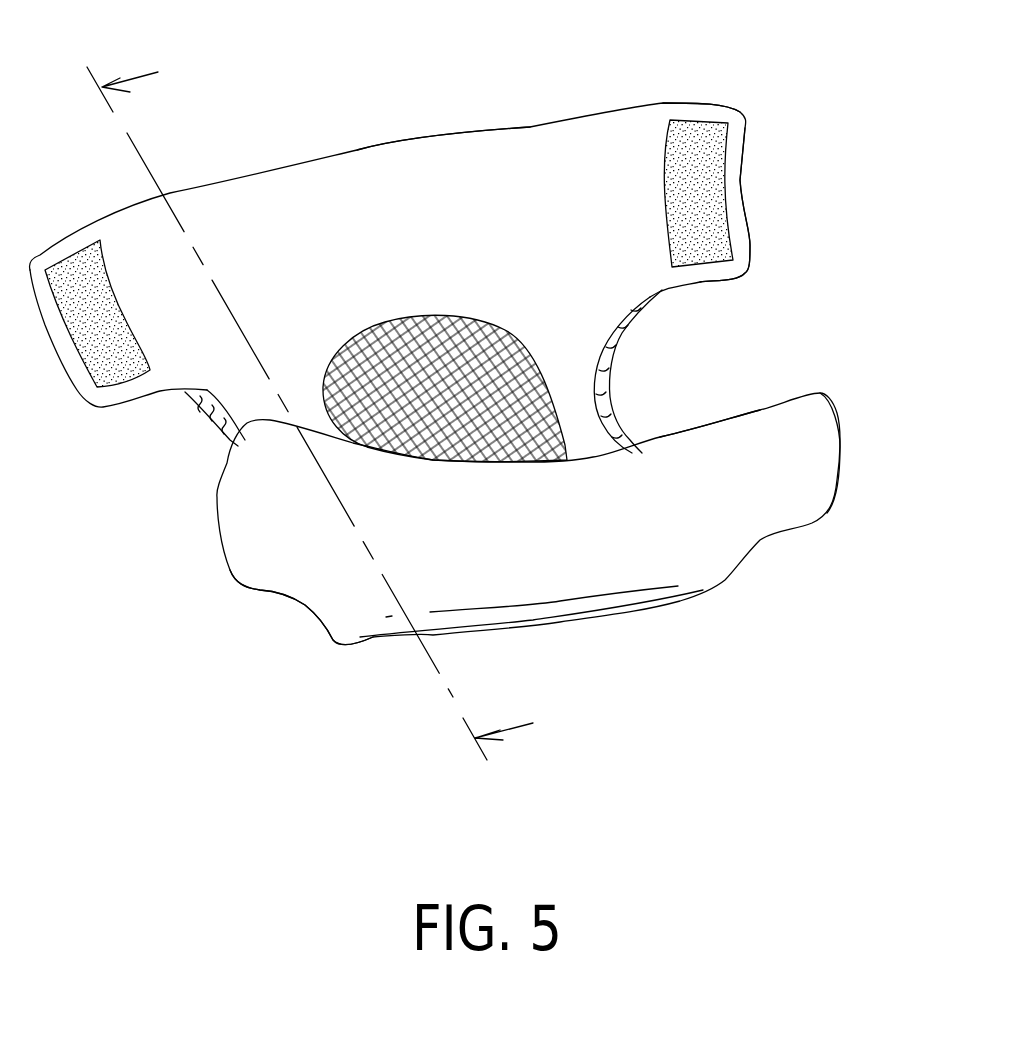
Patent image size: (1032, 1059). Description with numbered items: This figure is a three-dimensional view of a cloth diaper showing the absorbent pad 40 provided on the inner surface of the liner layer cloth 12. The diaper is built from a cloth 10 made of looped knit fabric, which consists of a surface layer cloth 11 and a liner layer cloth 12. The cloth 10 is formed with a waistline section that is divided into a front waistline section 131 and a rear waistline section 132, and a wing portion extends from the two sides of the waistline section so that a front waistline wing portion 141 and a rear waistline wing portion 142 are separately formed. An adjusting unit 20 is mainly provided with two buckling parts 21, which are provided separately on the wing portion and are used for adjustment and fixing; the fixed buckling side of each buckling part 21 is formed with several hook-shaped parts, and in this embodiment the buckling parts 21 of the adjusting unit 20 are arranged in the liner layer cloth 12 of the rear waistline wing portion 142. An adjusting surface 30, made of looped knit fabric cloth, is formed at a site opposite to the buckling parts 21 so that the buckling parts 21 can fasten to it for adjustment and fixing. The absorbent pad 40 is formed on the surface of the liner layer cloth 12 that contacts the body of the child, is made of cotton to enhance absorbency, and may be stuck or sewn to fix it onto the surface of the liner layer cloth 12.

The cloth 10 is at (742, 586).
The surface layer cloth 11 is at (343, 607).
The liner layer cloth 12 is at (575, 235).
The adjusting unit 20 is at (759, 201).
The buckling part 21 is at (707, 155).
The adjusting surface 30 is at (590, 492).
The absorbent pad 40 is at (550, 355).
The front waistline section 131 is at (670, 467).
The rear waistline section 132 is at (405, 150).
The front waistline wing portion 141 is at (815, 463).
The rear waistline wing portion 142 is at (700, 114).